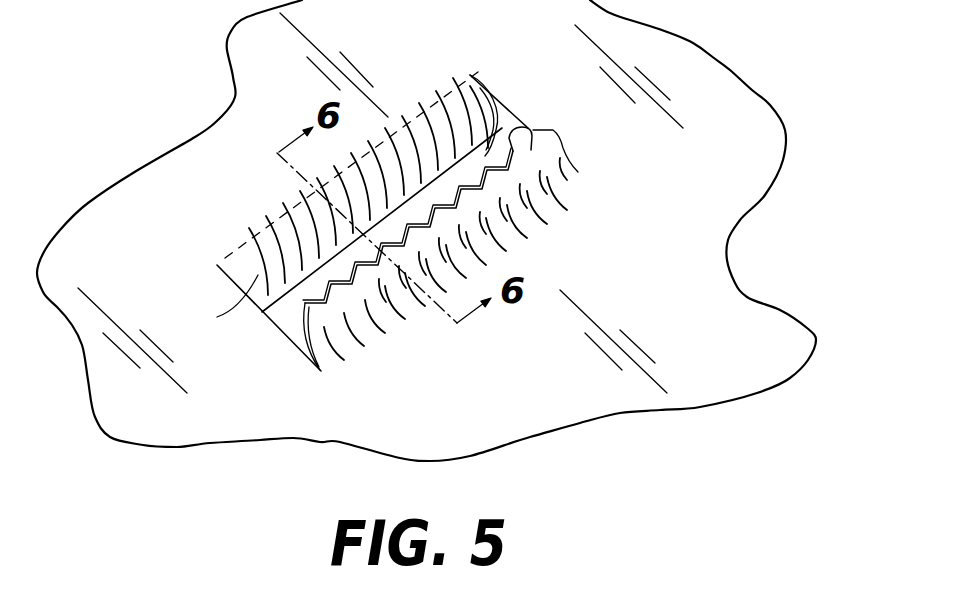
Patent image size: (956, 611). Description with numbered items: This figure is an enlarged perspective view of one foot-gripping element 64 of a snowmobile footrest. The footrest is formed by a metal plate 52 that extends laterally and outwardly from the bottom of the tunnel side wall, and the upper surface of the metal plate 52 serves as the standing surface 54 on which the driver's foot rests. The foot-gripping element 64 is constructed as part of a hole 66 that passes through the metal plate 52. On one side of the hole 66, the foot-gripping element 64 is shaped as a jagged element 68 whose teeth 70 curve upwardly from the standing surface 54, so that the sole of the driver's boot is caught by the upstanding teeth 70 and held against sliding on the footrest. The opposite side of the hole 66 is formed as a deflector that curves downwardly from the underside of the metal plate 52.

The metal plate 52 is at (730, 190).
The standing surface 54 is at (653, 284).
The foot-gripping element 64 is at (258, 333).
The hole 66 is at (469, 137).
The jagged element 68 is at (545, 168).
The teeth 70 is at (520, 128).